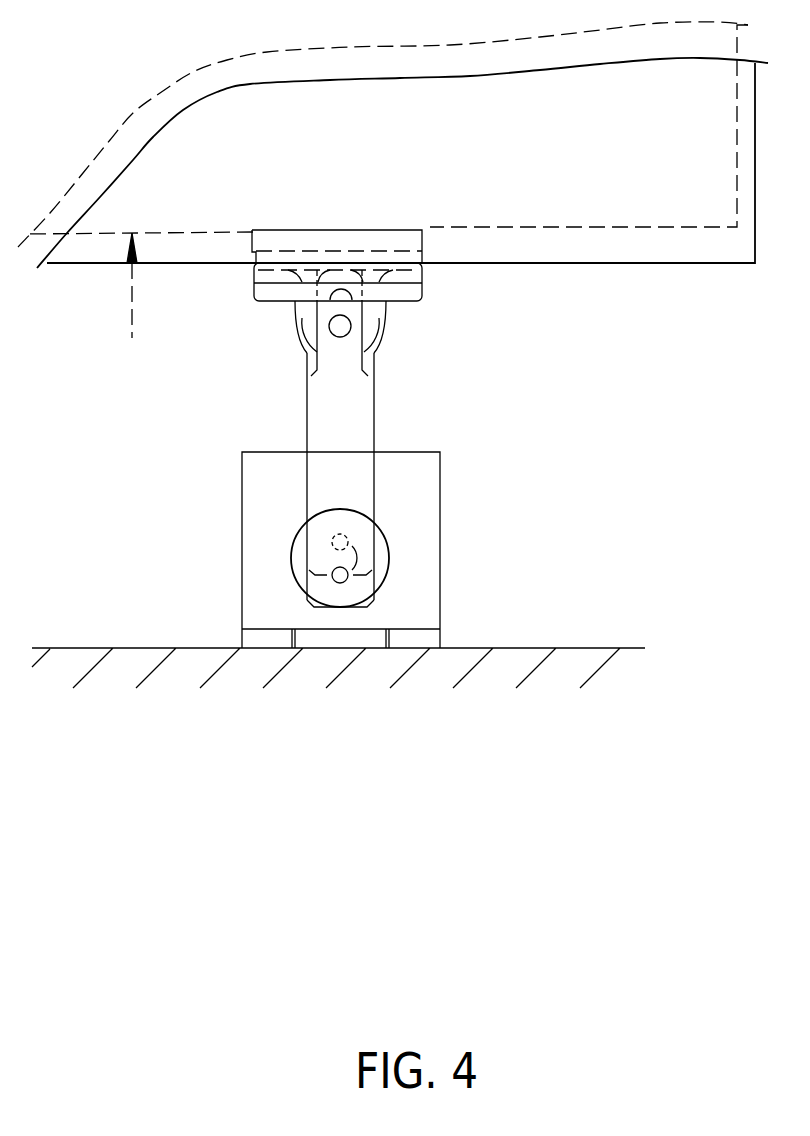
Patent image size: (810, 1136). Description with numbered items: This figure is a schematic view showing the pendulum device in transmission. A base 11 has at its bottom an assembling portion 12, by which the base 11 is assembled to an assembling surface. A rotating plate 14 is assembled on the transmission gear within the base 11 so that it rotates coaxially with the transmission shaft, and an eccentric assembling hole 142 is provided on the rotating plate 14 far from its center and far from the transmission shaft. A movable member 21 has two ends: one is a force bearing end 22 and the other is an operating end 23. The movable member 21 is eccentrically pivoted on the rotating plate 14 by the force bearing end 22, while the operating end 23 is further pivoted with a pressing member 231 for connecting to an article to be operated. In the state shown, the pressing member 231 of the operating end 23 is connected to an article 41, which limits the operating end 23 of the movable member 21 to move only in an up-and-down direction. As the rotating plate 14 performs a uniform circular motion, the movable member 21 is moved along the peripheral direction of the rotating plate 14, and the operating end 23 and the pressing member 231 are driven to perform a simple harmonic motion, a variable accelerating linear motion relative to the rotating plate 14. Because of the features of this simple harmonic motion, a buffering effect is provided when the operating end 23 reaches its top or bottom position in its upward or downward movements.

The base 11 is at (243, 542).
The assembling portion 12 is at (243, 638).
The rotating plate 14 is at (379, 547).
The eccentric assembling hole 142 is at (349, 578).
The movable member 21 is at (360, 431).
The force bearing end 22 is at (348, 600).
The operating end 23 is at (377, 331).
The pressing member 231 is at (416, 274).
The article 41 is at (647, 253).